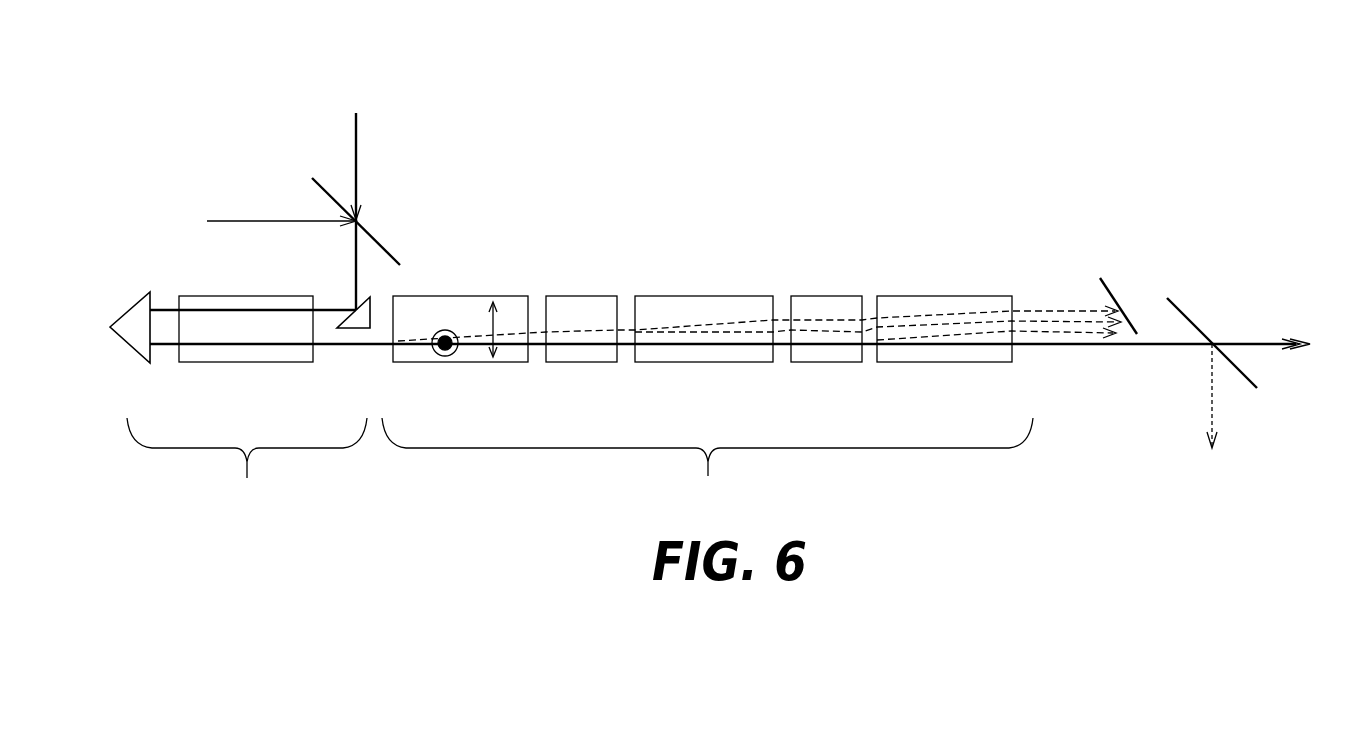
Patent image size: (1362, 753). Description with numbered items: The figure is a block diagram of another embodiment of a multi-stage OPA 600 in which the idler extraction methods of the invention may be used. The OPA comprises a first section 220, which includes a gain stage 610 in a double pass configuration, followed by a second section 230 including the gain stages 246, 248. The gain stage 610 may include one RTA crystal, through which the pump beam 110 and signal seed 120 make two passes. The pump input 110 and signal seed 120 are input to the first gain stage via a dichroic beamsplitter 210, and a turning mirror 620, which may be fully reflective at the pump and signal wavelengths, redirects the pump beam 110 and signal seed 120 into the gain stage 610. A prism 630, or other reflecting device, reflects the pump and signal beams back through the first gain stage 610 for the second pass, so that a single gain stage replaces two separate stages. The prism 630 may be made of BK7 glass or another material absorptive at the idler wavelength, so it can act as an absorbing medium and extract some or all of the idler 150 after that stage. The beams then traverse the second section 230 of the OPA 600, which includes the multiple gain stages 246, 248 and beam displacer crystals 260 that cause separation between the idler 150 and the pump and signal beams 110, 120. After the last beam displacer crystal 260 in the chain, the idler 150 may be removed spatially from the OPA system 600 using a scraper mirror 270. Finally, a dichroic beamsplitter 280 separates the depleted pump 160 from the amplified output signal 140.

The multi-stage OPA 600 is at (768, 109).
The pump beam 110 is at (356, 130).
The signal seed 120 is at (281, 218).
The dichroic beamsplitter 210 is at (367, 228).
The turning mirror 620 is at (370, 300).
The prism 630 is at (148, 292).
The gain stage 610 is at (228, 364).
The beam displacer crystals 260 is at (494, 365).
The gain stage 246 is at (588, 365).
The gain stage 248 is at (832, 365).
The first section 220 is at (247, 465).
The second section 230 is at (707, 465).
The idler 150 is at (1083, 320).
The scraper mirror 270 is at (1107, 282).
The dichroic beamsplitter 280 is at (1182, 308).
The depleted pump 160 is at (1250, 342).
The amplified output signal 140 is at (1212, 428).